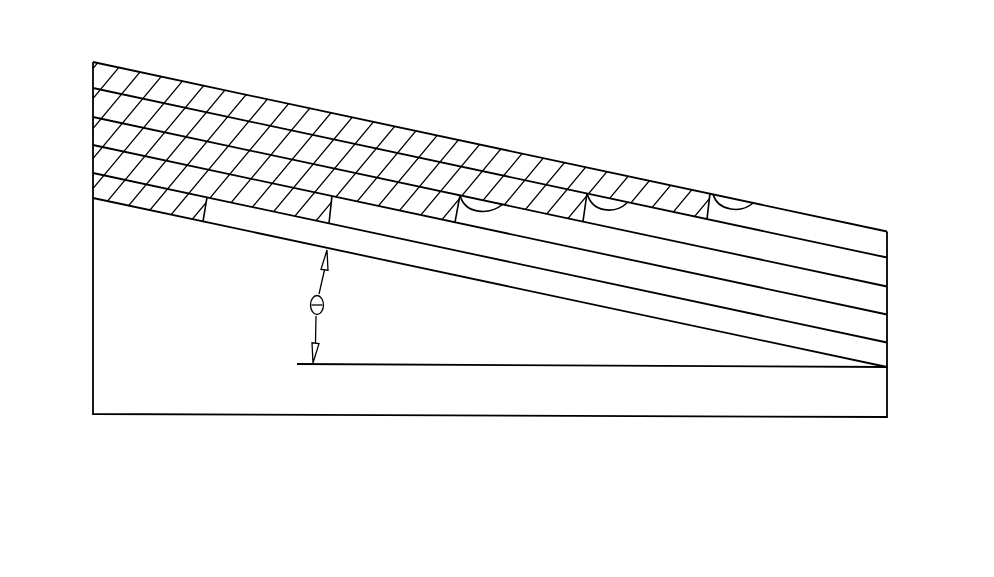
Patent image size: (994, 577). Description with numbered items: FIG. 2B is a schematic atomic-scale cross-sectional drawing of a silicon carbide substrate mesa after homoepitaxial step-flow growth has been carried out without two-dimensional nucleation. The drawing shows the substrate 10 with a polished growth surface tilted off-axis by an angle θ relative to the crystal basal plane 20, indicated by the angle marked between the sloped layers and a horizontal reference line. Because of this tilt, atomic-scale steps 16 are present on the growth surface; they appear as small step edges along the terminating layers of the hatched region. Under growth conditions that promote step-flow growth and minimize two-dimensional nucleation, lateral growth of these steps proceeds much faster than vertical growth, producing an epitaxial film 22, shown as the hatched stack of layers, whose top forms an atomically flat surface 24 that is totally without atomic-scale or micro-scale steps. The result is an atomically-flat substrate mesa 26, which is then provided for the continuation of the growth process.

The substrate 10 is at (620, 417).
The atomic-scale steps 16 is at (207, 195).
The crystal basal plane 20 is at (497, 284).
The epitaxial film 22 is at (450, 171).
The atomically flat surface 24 is at (308, 107).
The atomically-flat substrate mesa 26 is at (688, 62).